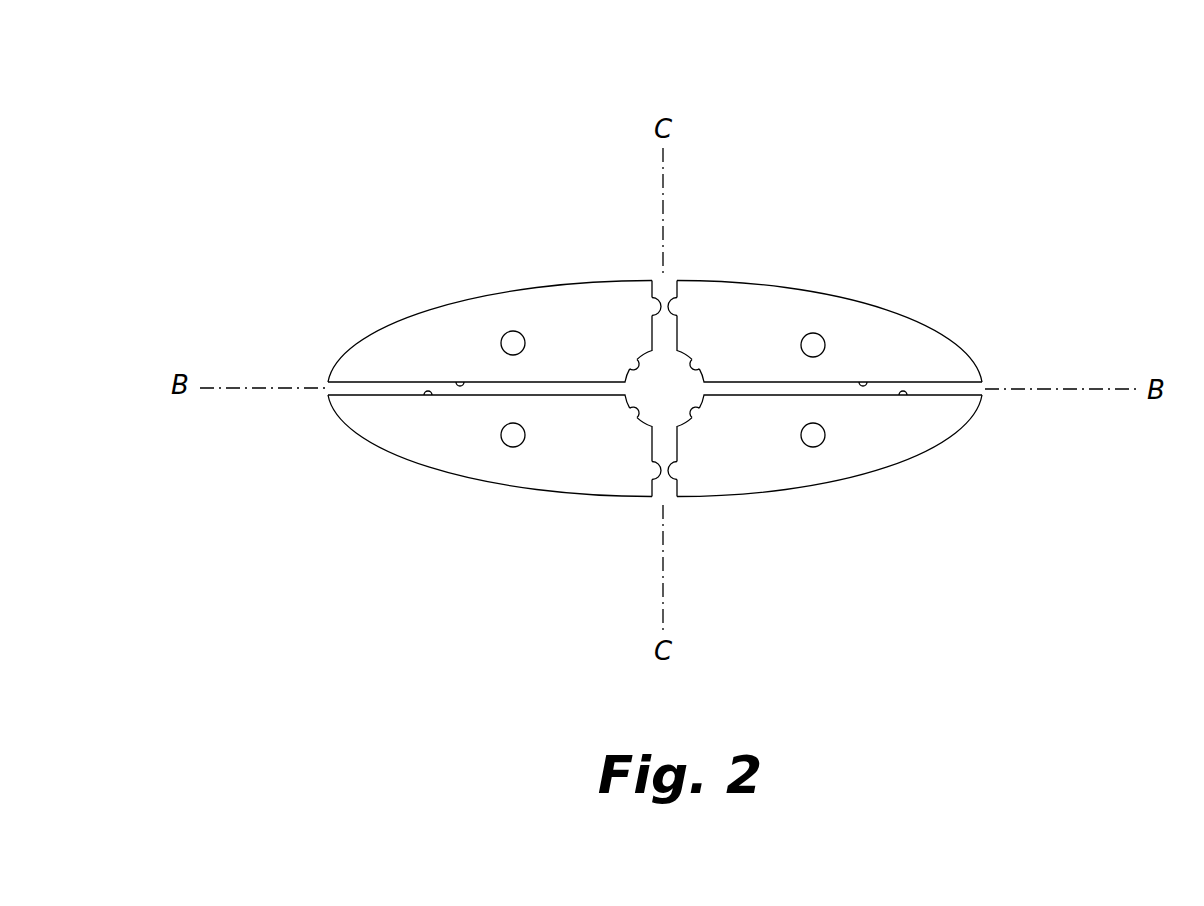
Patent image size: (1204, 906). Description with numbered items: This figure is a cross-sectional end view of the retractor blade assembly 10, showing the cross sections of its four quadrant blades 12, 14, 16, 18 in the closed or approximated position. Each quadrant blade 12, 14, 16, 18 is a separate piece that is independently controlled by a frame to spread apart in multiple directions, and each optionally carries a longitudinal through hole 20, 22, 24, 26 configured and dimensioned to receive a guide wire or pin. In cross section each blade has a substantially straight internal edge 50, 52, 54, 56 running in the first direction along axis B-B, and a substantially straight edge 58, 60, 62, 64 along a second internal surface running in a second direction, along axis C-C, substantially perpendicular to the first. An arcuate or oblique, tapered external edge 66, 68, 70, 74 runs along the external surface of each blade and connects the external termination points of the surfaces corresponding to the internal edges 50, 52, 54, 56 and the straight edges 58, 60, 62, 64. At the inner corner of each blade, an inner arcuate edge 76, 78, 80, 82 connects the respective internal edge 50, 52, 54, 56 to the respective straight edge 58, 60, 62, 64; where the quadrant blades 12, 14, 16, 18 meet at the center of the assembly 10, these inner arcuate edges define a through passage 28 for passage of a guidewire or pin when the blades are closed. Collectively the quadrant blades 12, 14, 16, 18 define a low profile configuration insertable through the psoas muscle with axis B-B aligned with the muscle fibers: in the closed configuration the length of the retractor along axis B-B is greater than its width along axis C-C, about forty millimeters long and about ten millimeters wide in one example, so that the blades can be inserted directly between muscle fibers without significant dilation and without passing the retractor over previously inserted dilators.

The retractor blade assembly 10 is at (503, 162).
The quadrant blade 12 is at (892, 308).
The quadrant blade 14 is at (895, 475).
The quadrant blade 16 is at (410, 462).
The quadrant blade 18 is at (407, 313).
The longitudinal through hole 20 is at (813, 333).
The longitudinal through hole 22 is at (813, 447).
The longitudinal through hole 24 is at (513, 447).
The longitudinal through hole 26 is at (513, 331).
The through passage 28 is at (676, 402).
The internal edge 50 is at (865, 381).
The internal edge 52 is at (903, 396).
The internal edge 54 is at (428, 396).
The internal edge 56 is at (460, 380).
The straight edge 58 is at (679, 305).
The straight edge 60 is at (679, 478).
The straight edge 62 is at (650, 478).
The straight edge 64 is at (650, 300).
The external edge 66 is at (962, 350).
The external edge 68 is at (957, 424).
The external edge 70 is at (356, 426).
The external edge 74 is at (336, 372).
The inner arcuate edge 76 is at (696, 365).
The inner arcuate edge 78 is at (696, 410).
The inner arcuate edge 80 is at (630, 410).
The inner arcuate edge 82 is at (630, 366).